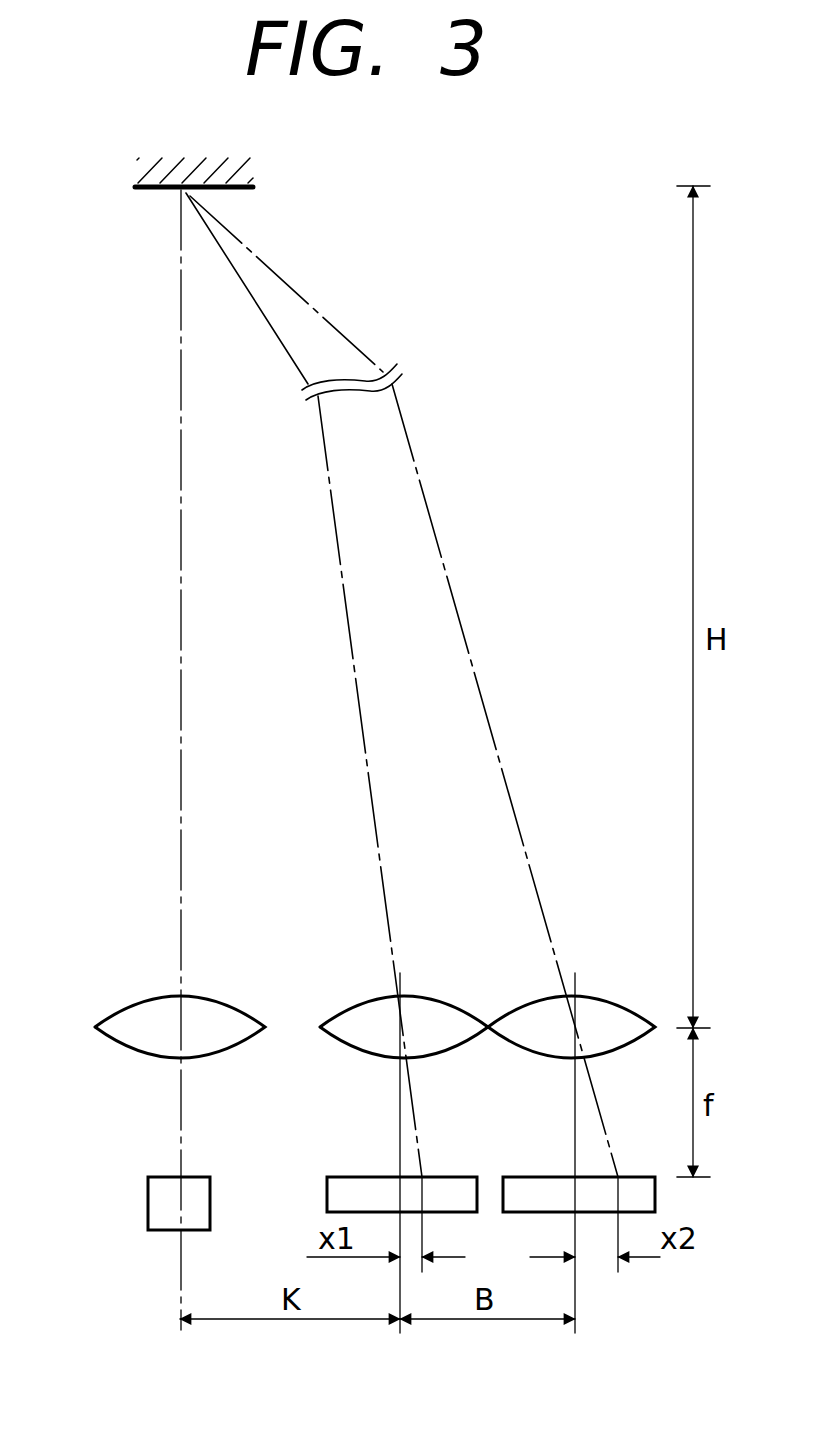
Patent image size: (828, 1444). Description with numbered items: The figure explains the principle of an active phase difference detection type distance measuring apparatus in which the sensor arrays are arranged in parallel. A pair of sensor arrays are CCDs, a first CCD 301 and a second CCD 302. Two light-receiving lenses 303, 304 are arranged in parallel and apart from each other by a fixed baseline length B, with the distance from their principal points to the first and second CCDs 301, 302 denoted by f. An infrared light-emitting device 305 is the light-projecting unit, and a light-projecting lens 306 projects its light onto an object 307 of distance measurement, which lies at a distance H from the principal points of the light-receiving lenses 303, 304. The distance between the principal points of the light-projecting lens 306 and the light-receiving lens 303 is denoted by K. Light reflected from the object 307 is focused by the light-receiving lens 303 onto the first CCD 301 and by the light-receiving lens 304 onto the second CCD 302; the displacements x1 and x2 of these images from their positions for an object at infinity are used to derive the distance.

The first CCD 301 is at (347, 1177).
The second CCD 302 is at (544, 1177).
The light-receiving lens 303 is at (350, 1003).
The light-receiving lens 304 is at (597, 998).
The infrared light-emitting device 305 is at (148, 1195).
The light-projecting lens 306 is at (128, 1003).
The object 307 is at (254, 177).